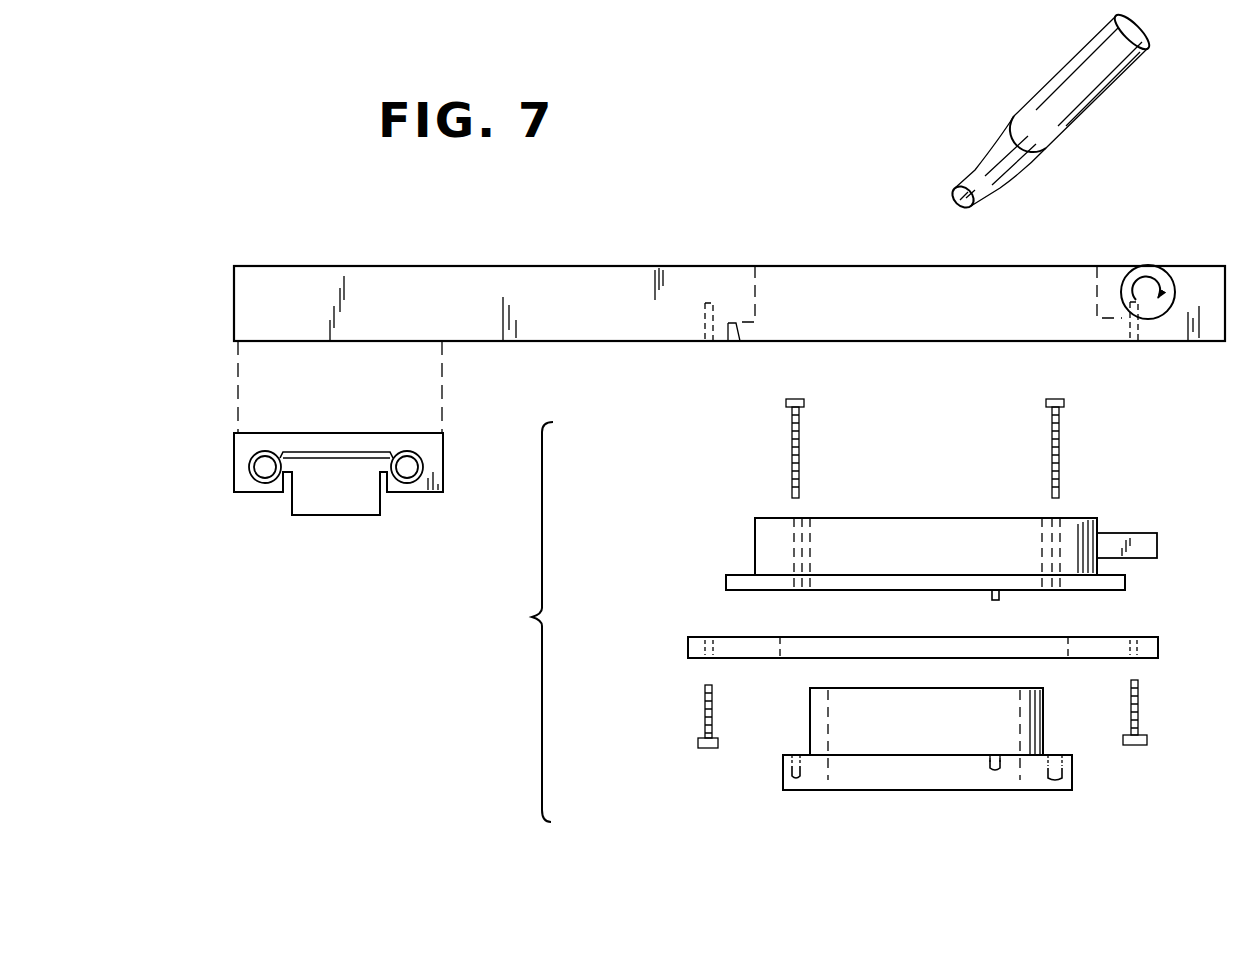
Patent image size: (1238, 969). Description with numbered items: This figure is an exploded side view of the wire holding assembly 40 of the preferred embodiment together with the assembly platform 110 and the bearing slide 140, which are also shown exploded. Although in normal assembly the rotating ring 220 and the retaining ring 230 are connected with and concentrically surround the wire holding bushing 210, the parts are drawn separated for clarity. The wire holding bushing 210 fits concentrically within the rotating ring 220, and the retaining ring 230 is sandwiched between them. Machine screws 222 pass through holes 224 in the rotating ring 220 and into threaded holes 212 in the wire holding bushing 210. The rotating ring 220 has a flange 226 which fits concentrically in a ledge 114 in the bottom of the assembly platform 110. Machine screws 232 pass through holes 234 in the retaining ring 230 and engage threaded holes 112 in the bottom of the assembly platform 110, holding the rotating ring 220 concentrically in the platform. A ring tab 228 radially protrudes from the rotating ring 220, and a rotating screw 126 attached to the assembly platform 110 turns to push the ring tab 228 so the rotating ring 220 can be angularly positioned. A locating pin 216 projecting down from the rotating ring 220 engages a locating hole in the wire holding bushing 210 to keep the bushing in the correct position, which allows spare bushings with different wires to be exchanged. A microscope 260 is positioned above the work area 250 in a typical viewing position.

The wire holding assembly 40 is at (527, 622).
The assembly platform 110 is at (432, 290).
The threaded holes 112 is at (705, 320).
The ledge 114 is at (740, 335).
The rotating screw 126 is at (1152, 260).
The bearing slide 140 is at (230, 504).
The wire holding bushing 210 is at (1082, 774).
The threaded holes 212 is at (795, 758).
The locating pin 216 is at (990, 600).
The rotating ring 220 is at (750, 547).
The machine screws 222 is at (792, 450).
The holes 224 is at (795, 530).
The flange 226 is at (1127, 581).
The ring tab 228 is at (1148, 546).
The retaining ring 230 is at (748, 632).
The machine screws 232 is at (705, 710).
The holes 234 is at (706, 648).
The work area 250 is at (886, 794).
The microscope 260 is at (1042, 72).